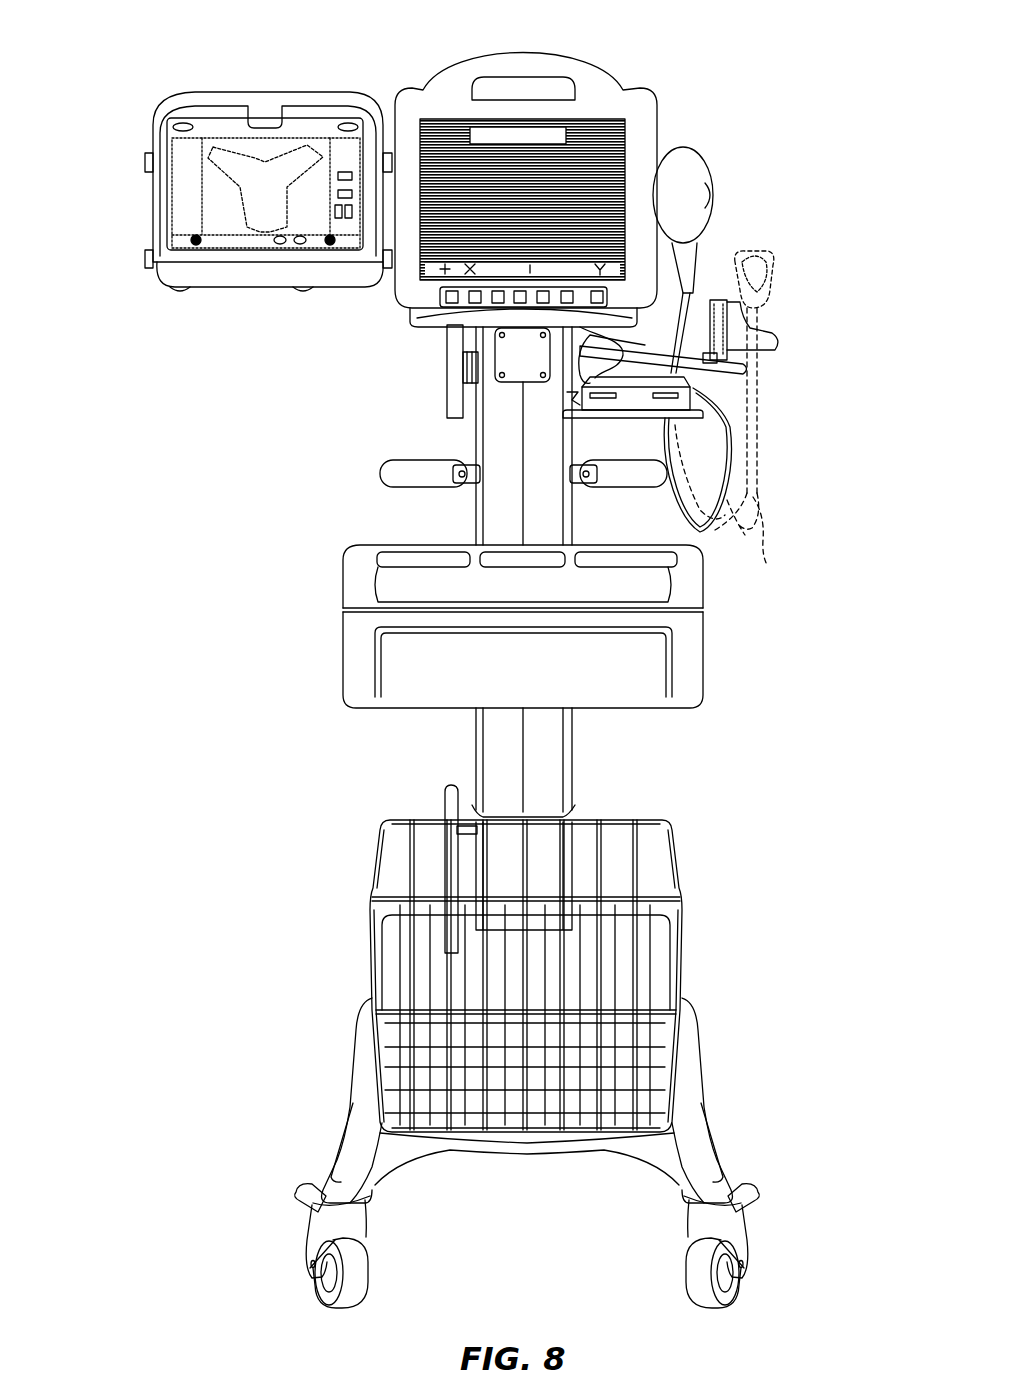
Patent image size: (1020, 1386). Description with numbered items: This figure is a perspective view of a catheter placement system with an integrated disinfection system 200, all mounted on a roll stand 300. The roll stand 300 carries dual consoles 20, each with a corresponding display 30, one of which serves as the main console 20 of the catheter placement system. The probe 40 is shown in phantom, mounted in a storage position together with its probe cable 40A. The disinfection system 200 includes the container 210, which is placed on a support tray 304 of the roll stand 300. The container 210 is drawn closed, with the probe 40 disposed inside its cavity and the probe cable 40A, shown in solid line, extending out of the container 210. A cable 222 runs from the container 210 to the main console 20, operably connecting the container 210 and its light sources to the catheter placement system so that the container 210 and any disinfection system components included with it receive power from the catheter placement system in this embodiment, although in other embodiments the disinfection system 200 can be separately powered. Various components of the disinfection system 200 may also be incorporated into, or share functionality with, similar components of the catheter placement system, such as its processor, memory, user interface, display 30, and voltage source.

The roll stand 300 is at (148, 94).
The console 20 is at (407, 97).
The display 30 is at (475, 220).
The cable 222 is at (645, 345).
The disinfection system 200 is at (697, 383).
The container 210 is at (633, 400).
The support tray 304 is at (697, 428).
The probe 40 is at (773, 282).
The probe cable 40A is at (727, 503).